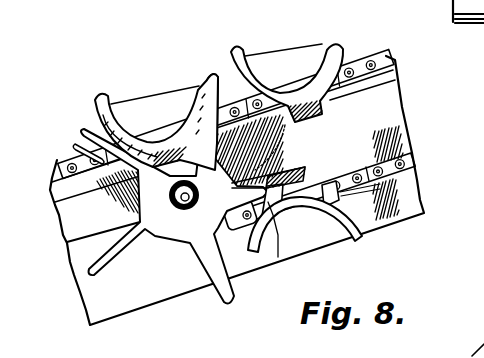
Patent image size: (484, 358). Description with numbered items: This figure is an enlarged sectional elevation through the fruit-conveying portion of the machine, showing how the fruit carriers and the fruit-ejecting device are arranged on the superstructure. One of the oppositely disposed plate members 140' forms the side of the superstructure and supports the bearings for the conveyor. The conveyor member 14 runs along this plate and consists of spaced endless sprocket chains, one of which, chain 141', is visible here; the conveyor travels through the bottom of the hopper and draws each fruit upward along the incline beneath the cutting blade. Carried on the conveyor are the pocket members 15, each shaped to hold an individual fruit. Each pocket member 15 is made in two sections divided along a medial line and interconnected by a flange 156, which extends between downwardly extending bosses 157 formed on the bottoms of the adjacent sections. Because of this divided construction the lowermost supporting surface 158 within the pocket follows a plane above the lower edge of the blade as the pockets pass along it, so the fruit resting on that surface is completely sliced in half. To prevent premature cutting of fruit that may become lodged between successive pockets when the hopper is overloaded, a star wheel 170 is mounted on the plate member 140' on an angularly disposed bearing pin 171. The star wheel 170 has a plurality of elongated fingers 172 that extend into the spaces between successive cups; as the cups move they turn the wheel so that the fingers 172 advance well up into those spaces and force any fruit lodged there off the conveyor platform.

The plate member 140' is at (237, 201).
The sprocket chain 141' is at (265, 125).
The star wheel 170 is at (172, 258).
The bearing pin 171 is at (172, 203).
The elongated fingers 172 is at (83, 126).
The lowermost supporting surface 158 is at (297, 88).
The bosses 157 is at (325, 101).
The flange 156 is at (313, 113).
The pocket member 15 is at (324, 43).
The conveyor member 14 is at (300, 44).